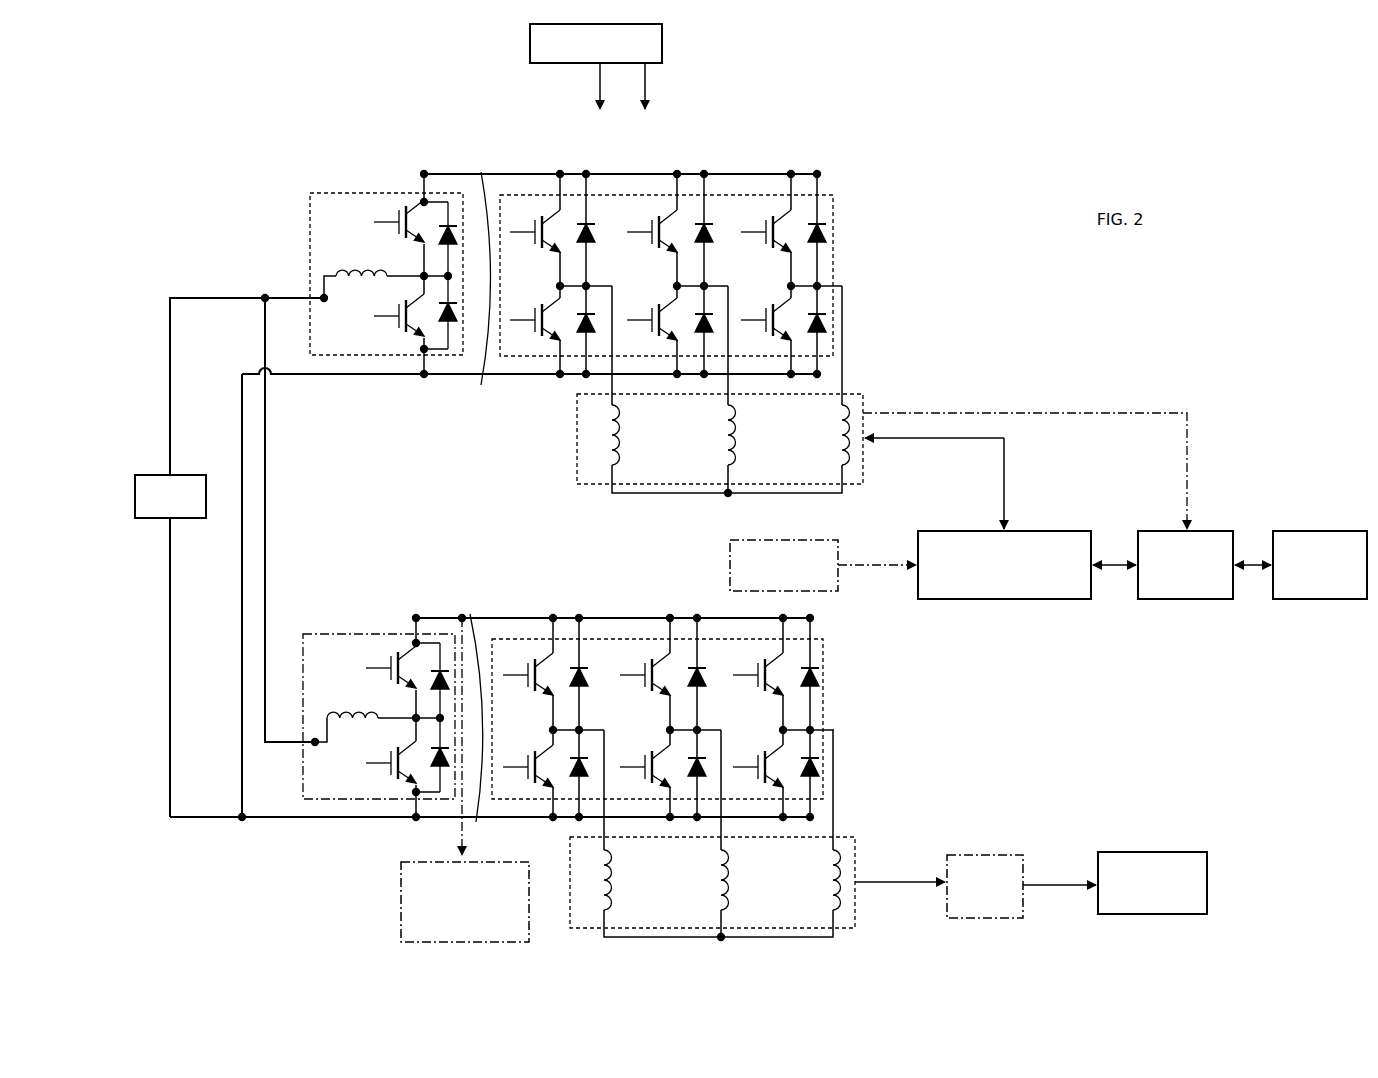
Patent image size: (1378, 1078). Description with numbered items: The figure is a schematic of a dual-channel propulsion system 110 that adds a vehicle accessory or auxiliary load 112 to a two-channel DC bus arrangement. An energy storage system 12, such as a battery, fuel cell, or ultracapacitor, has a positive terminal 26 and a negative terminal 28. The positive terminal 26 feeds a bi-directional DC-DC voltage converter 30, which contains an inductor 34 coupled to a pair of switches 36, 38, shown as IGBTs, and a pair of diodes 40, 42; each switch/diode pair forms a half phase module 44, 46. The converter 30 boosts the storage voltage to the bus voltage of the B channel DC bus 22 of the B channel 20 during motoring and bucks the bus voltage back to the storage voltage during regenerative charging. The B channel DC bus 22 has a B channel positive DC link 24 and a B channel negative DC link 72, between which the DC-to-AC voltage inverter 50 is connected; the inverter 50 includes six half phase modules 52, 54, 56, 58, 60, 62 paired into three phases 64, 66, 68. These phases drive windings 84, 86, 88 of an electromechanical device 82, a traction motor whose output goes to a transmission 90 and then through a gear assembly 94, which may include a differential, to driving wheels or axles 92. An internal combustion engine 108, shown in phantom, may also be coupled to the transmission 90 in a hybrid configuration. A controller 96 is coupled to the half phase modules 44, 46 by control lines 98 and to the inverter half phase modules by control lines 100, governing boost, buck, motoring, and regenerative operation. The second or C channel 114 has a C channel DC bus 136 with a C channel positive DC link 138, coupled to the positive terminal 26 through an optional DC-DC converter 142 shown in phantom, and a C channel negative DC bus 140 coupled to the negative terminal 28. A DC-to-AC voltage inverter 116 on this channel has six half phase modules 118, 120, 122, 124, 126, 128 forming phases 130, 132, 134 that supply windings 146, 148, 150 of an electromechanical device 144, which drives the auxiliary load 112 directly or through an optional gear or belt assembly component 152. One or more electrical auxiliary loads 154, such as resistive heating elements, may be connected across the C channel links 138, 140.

The energy storage system 12 is at (186, 496).
The B channel 20 is at (556, 271).
The B channel DC bus 22 is at (487, 278).
The B channel positive DC link 24 is at (620, 159).
The positive terminal 26 is at (234, 385).
The negative terminal 28 is at (189, 667).
The first bi-directional DC-DC voltage converter assembly 30 is at (399, 270).
The inductor 34 is at (370, 267).
The switch 36 is at (395, 227).
The switch 38 is at (395, 321).
The diode 40 is at (464, 243).
The diode 42 is at (464, 320).
The half phase module 44 is at (357, 217).
The half phase module 46 is at (359, 310).
The DC-to-AC voltage inverter 50 is at (685, 255).
The half phase module 52 is at (533, 228).
The half phase module 54 is at (649, 228).
The half phase module 56 is at (761, 228).
The half phase module 58 is at (533, 317).
The half phase module 60 is at (649, 317).
The half phase module 62 is at (761, 317).
The phase 64 is at (559, 255).
The phase 66 is at (674, 255).
The phase 68 is at (786, 263).
The B channel negative DC link 72 is at (529, 389).
The electromechanical device 82 is at (704, 391).
The winding 84 is at (622, 435).
The winding 86 is at (738, 435).
The winding 88 is at (828, 432).
The transmission 90 is at (1004, 581).
The driving wheels or axles 92 is at (1320, 582).
The gear assembly 94 is at (1185, 581).
The controller 96 is at (600, 66).
The control lines 98 is at (580, 86).
The control lines 100 is at (673, 86).
The internal combustion engine 108 is at (806, 565).
The dual-channel propulsion system 110 is at (751, 483).
The auxiliary load 112 is at (1152, 868).
The C channel 114 is at (519, 705).
The DC-to-AC voltage inverter 116 is at (680, 699).
The half phase module 118 is at (524, 671).
The half phase module 120 is at (524, 762).
The half phase module 122 is at (638, 671).
The half phase module 124 is at (638, 762).
The half phase module 126 is at (749, 671).
The half phase module 128 is at (750, 762).
The phase 130 is at (549, 699).
The phase 132 is at (664, 699).
The phase 134 is at (774, 707).
The C channel DC bus 136 is at (478, 718).
The C channel positive DC link 138 is at (610, 602).
The C channel negative DC bus 140 is at (490, 834).
The DC-DC converter 142 is at (379, 715).
The electromechanical device 144 is at (734, 835).
The winding 146 is at (628, 880).
The winding 148 is at (745, 880).
The winding 150 is at (815, 876).
The gear or belt assembly component 152 is at (985, 872).
The electrical auxiliary load 154 is at (446, 902).